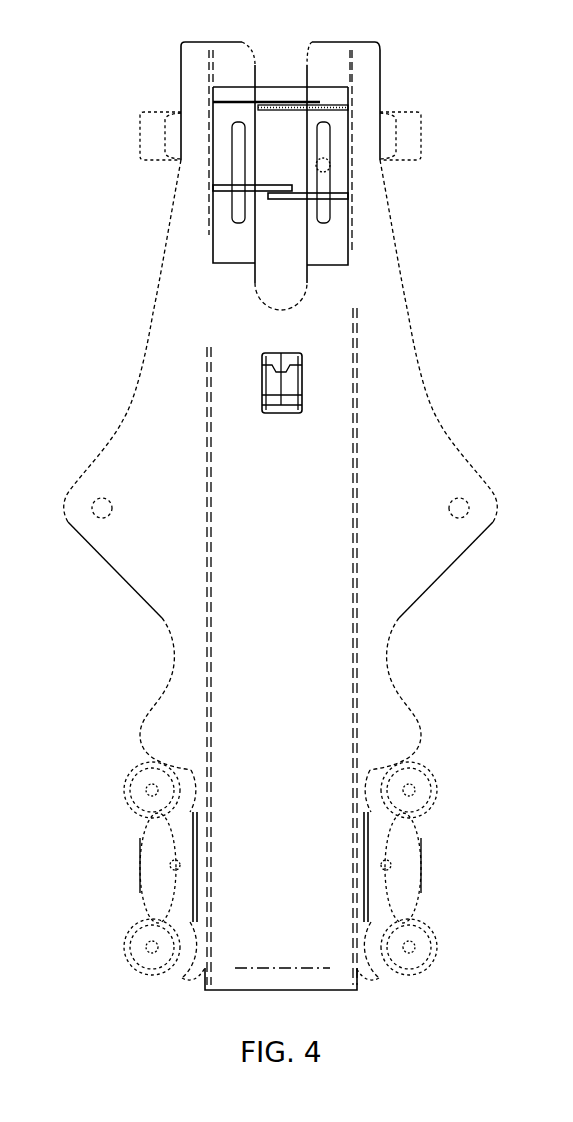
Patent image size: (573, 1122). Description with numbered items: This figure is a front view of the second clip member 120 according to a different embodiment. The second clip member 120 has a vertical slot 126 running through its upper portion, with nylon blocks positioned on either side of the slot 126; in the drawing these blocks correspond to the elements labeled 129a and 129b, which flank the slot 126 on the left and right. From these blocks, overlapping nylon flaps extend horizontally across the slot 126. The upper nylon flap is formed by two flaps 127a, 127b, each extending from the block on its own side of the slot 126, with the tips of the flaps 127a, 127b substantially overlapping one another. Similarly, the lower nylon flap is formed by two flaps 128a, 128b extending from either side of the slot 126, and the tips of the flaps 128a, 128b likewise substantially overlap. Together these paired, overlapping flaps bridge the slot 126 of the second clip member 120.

The second clip member 120 is at (127, 45).
The vertical slot 126 is at (293, 80).
The upper nylon flap 127a is at (228, 102).
The upper nylon flap 127b is at (320, 107).
The lower nylon flap 128a is at (225, 188).
The lower nylon flap 128b is at (335, 198).
The clamp block 129a is at (225, 245).
The clamp block 129b is at (332, 255).